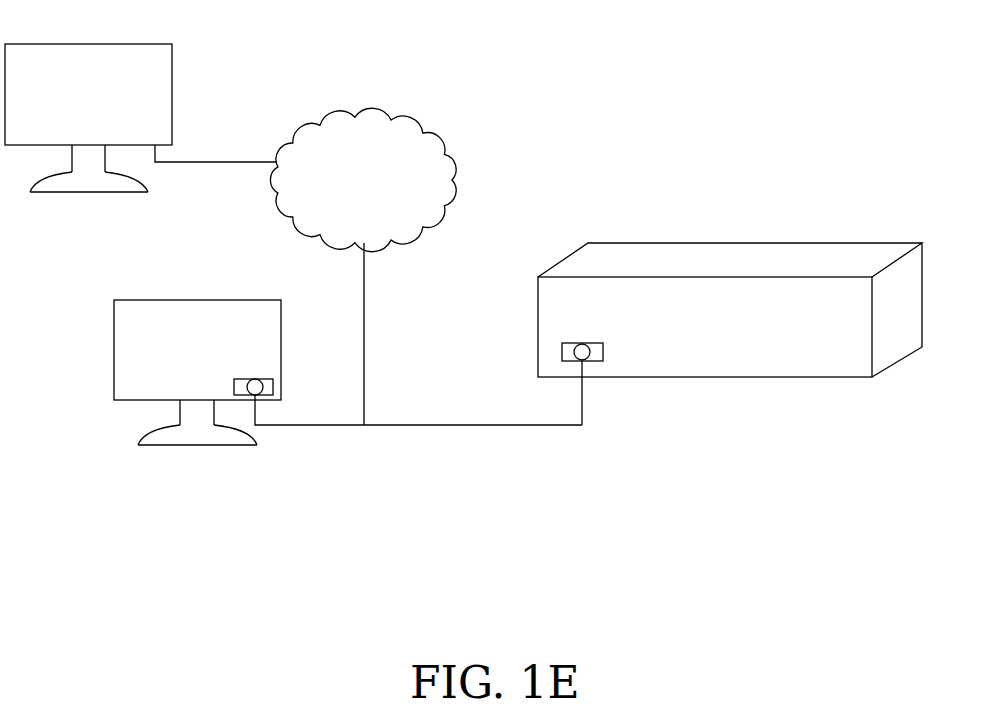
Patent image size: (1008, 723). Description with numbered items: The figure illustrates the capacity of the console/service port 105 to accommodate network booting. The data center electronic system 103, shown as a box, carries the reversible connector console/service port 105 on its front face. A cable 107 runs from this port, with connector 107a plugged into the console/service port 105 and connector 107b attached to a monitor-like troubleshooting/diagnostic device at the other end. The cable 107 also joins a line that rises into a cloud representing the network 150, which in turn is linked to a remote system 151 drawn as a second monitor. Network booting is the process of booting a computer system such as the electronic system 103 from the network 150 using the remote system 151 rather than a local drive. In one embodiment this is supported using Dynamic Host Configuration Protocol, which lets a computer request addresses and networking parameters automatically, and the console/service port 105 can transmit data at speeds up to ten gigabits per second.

The remote system 151 is at (88, 60).
The network 150 is at (390, 126).
The data center electronic system 103 is at (853, 257).
The console/service port 105 is at (583, 343).
The cable 107 is at (330, 425).
The connector 107a is at (605, 354).
The connector 107b is at (246, 377).